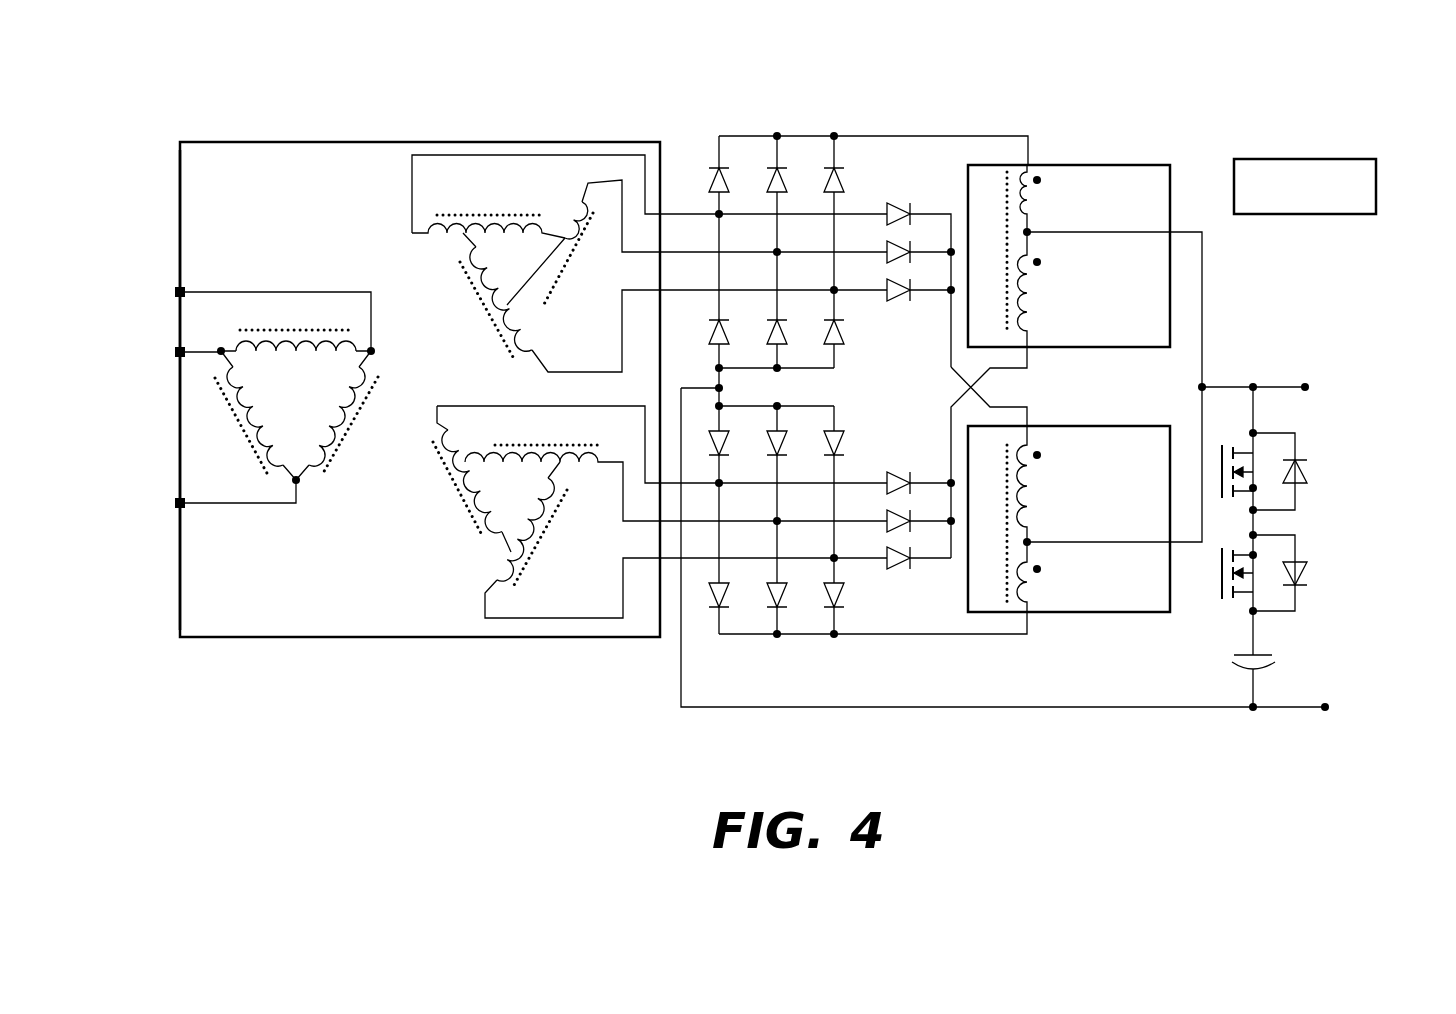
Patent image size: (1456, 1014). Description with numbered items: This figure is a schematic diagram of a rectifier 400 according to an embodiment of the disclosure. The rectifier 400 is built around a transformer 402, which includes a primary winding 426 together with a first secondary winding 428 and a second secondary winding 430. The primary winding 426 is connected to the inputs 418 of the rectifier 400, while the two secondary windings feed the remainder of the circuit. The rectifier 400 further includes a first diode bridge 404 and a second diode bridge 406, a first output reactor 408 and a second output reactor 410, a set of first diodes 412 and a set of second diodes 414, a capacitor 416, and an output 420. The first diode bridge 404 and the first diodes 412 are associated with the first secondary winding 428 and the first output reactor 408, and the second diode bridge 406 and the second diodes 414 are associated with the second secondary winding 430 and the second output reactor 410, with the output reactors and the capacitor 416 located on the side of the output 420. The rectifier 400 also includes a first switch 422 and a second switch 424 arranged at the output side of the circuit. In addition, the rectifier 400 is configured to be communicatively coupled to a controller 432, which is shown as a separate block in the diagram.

The rectifier 400 is at (247, 104).
The transformer 402 is at (422, 142).
The first diode bridge 404 is at (752, 121).
The second diode bridge 406 is at (750, 715).
The first output reactor 408 is at (1107, 165).
The second output reactor 410 is at (1085, 612).
The first diodes 412 is at (878, 194).
The second diodes 414 is at (913, 580).
The capacitor 416 is at (1266, 652).
The inputs 418 is at (176, 290).
The output 420 is at (1308, 386).
The first switch 422 is at (1324, 481).
The second switch 424 is at (1317, 577).
The primary winding 426 is at (313, 499).
The first secondary winding 428 is at (488, 332).
The second secondary winding 430 is at (468, 547).
The controller 432 is at (1305, 158).